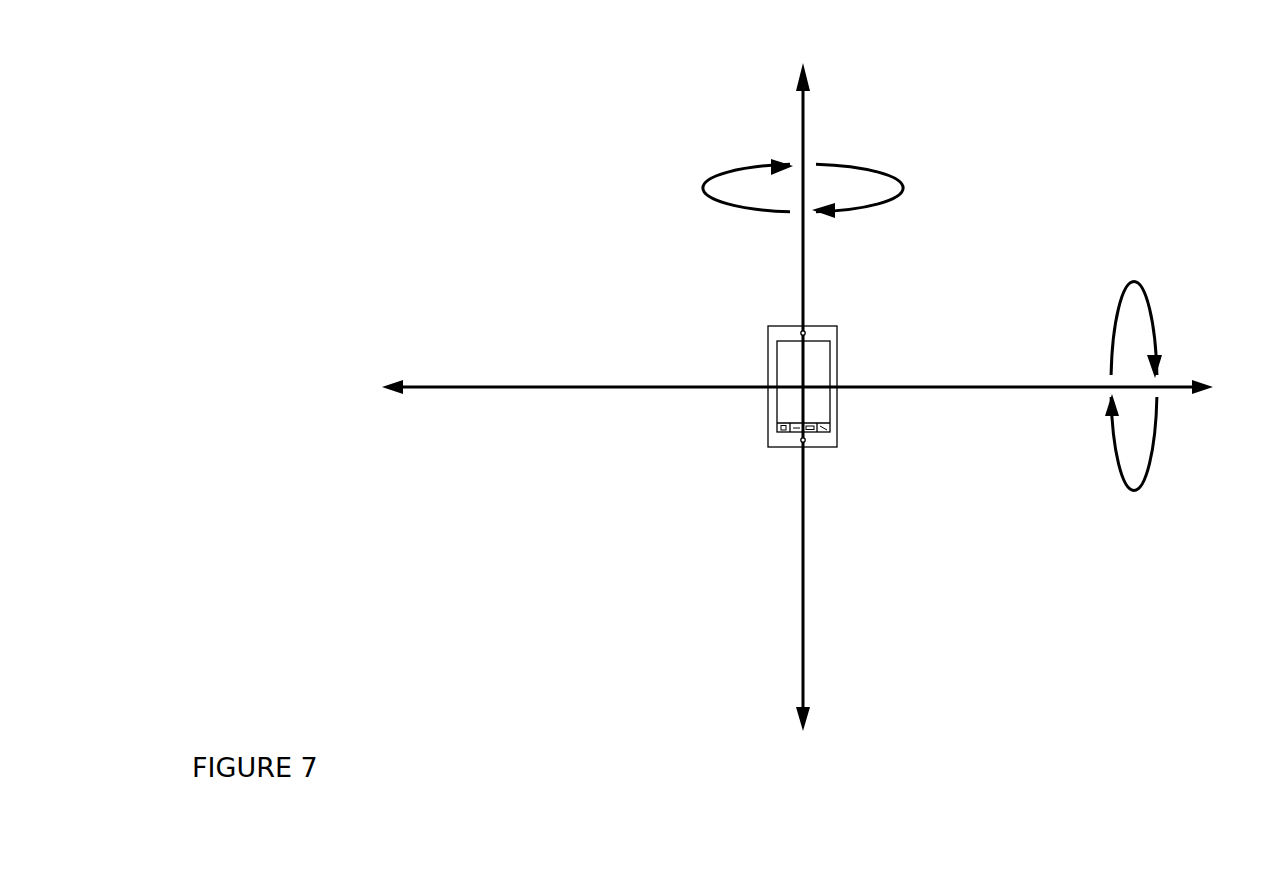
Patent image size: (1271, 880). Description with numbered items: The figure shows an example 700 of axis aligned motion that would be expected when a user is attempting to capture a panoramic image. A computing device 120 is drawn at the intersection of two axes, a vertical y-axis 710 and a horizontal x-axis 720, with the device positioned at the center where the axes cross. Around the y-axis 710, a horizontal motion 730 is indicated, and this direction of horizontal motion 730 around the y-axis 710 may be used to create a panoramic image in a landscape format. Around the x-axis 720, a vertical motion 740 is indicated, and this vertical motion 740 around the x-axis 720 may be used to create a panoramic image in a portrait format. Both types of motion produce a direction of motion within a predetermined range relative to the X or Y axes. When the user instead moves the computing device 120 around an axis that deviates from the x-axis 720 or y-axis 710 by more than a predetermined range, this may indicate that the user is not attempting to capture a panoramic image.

The example 700 is at (271, 726).
The y-axis 710 is at (797, 88).
The x-axis 720 is at (378, 394).
The horizontal motion 730 is at (702, 189).
The vertical motion 740 is at (1128, 283).
The computing device 120 is at (768, 360).